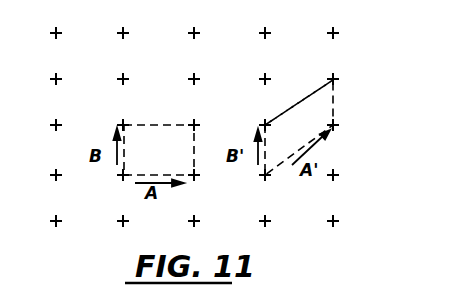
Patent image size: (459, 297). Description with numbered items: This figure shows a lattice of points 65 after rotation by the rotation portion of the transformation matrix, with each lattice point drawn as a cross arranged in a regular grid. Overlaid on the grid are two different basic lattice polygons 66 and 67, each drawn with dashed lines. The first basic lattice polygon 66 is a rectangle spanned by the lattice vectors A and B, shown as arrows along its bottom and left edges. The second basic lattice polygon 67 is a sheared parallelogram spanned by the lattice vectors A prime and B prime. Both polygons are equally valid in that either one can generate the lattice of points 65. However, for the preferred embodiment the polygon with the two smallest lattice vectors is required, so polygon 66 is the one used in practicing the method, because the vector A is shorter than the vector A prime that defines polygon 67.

The lattice of points 65 is at (320, 60).
The basic lattice polygon 66 is at (171, 91).
The basic lattice polygon 67 is at (313, 94).